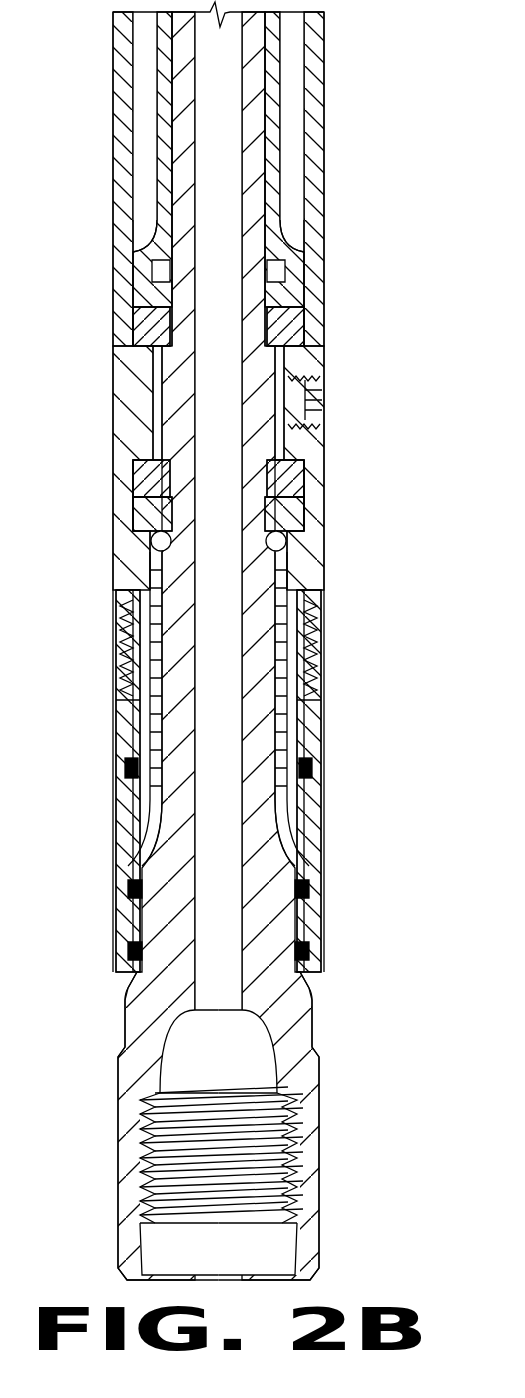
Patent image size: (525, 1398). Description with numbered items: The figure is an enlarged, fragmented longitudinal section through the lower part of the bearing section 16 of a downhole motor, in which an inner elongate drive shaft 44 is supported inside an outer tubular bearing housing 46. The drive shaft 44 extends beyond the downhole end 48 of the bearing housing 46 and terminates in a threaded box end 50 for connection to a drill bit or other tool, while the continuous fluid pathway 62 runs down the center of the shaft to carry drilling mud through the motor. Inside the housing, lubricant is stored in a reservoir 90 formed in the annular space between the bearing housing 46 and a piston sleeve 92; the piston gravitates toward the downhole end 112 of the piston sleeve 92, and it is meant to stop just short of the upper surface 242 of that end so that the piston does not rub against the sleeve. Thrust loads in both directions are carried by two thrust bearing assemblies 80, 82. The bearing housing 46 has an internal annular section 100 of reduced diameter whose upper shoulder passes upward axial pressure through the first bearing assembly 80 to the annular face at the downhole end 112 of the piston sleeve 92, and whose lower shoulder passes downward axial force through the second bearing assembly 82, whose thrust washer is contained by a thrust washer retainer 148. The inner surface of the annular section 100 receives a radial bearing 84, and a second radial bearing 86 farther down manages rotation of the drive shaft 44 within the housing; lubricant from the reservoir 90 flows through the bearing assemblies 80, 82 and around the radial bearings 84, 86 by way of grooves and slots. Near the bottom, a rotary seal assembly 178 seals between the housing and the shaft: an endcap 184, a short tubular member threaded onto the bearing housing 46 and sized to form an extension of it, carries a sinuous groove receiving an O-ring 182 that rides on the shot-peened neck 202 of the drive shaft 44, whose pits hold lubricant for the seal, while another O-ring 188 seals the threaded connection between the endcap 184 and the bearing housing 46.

The bearing section 16 is at (113, 336).
The lubricant reservoir 90 is at (140, 98).
The piston sleeve 92 is at (272, 58).
The upper surface of the piston sleeve end 242 is at (150, 240).
The downhole end of the piston sleeve 112 is at (286, 240).
The first thrust bearing assembly 80 is at (306, 315).
The internal annular section 100 is at (128, 412).
The radial bearing 84 is at (305, 445).
The second thrust bearing assembly 82 is at (283, 478).
The thrust washer retainer 148 is at (150, 520).
The bearing housing 46 is at (326, 565).
The fluid pathway 62 is at (220, 620).
The radial bearing 86 is at (300, 645).
The O-ring 188 is at (122, 770).
The endcap 184 is at (116, 808).
The downhole end of the bearing housing 48 is at (326, 815).
The rotary seal assembly 178 is at (116, 897).
The O-ring 182 is at (317, 889).
The neck of the drive shaft 202 is at (265, 917).
The drive shaft 44 is at (125, 1015).
The threaded box end 50 is at (118, 1097).